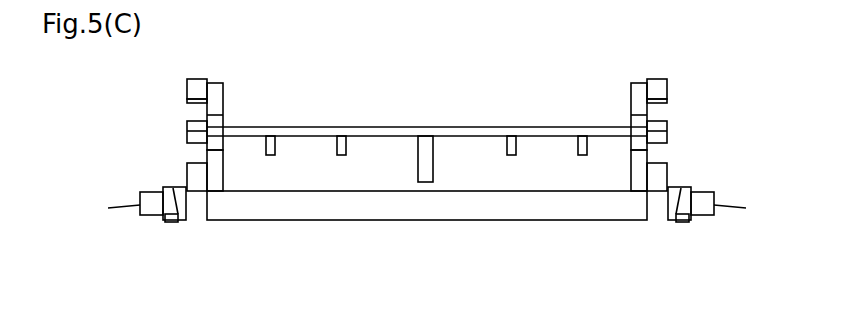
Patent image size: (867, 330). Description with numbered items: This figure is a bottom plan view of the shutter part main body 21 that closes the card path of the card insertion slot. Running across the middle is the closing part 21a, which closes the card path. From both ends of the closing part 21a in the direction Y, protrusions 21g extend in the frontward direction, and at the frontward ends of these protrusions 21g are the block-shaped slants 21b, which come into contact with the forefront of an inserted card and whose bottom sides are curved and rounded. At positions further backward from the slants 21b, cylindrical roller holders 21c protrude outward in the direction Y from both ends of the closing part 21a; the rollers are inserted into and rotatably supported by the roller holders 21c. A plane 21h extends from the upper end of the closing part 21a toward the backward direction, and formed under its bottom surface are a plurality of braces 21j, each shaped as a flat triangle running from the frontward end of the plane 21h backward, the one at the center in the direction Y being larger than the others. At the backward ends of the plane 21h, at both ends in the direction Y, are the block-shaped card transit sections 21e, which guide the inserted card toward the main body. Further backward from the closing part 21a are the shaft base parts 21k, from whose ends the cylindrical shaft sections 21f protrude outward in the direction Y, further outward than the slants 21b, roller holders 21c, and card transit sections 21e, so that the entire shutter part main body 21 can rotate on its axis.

The shutter part main body 21 is at (497, 127).
The closing part 21a is at (362, 127).
The slants 21b is at (196, 78).
The roller holders 21c is at (187, 132).
The card transit sections 21e is at (187, 173).
The shaft sections 21f is at (428, 205).
The protrusions 21g is at (223, 105).
The plane 21h is at (485, 180).
The braces 21j is at (277, 150).
The shaft base parts 21k is at (170, 222).